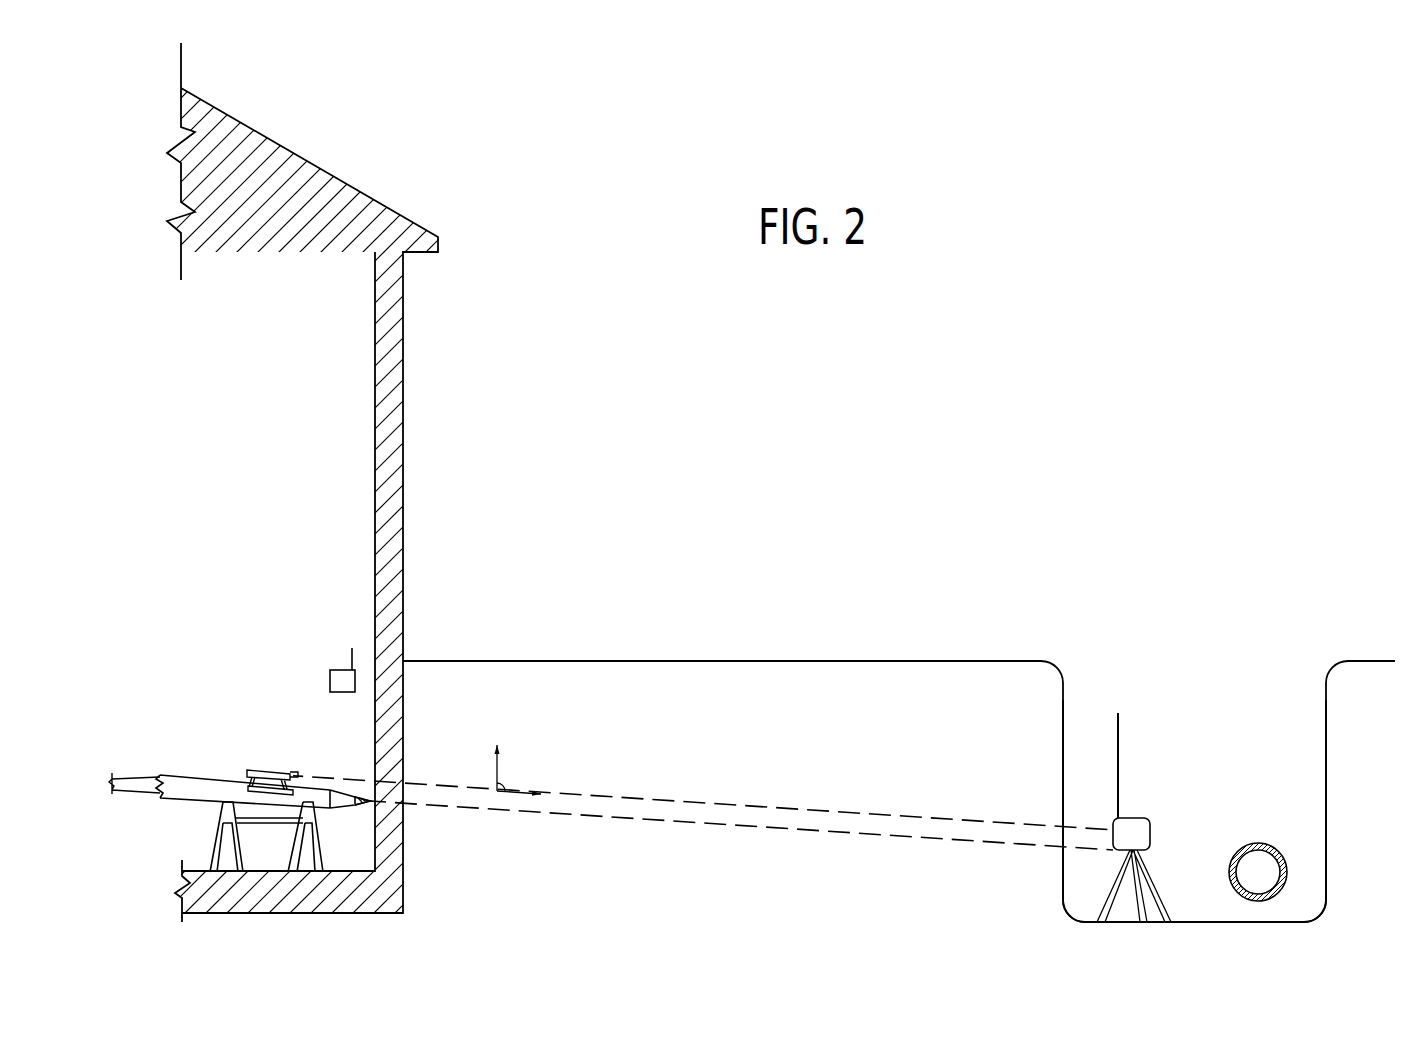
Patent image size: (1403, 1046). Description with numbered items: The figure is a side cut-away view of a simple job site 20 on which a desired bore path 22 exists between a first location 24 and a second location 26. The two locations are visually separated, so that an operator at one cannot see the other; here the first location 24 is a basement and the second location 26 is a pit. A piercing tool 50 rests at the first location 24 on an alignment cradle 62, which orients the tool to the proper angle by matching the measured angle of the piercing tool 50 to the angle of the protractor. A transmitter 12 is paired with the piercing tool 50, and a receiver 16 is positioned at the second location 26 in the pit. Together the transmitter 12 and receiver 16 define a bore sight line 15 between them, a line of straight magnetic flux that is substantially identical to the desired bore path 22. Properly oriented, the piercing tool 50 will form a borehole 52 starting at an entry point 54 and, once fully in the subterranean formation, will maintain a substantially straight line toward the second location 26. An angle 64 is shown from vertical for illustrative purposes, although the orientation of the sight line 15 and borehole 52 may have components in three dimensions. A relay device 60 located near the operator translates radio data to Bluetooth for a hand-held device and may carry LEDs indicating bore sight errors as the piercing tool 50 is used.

The transmitter 12 is at (287, 771).
The bore sight line 15 is at (843, 812).
The receiver 16 is at (1150, 818).
The job site 20 is at (1024, 413).
The bore path 22 is at (687, 600).
The first location 24 is at (258, 555).
The second location 26 is at (1185, 687).
The piercing tool 50 is at (233, 792).
The borehole 52 is at (748, 827).
The entry point 54 is at (370, 801).
The relay device 60 is at (338, 670).
The alignment cradle 62 is at (263, 823).
The angle 64 is at (499, 785).